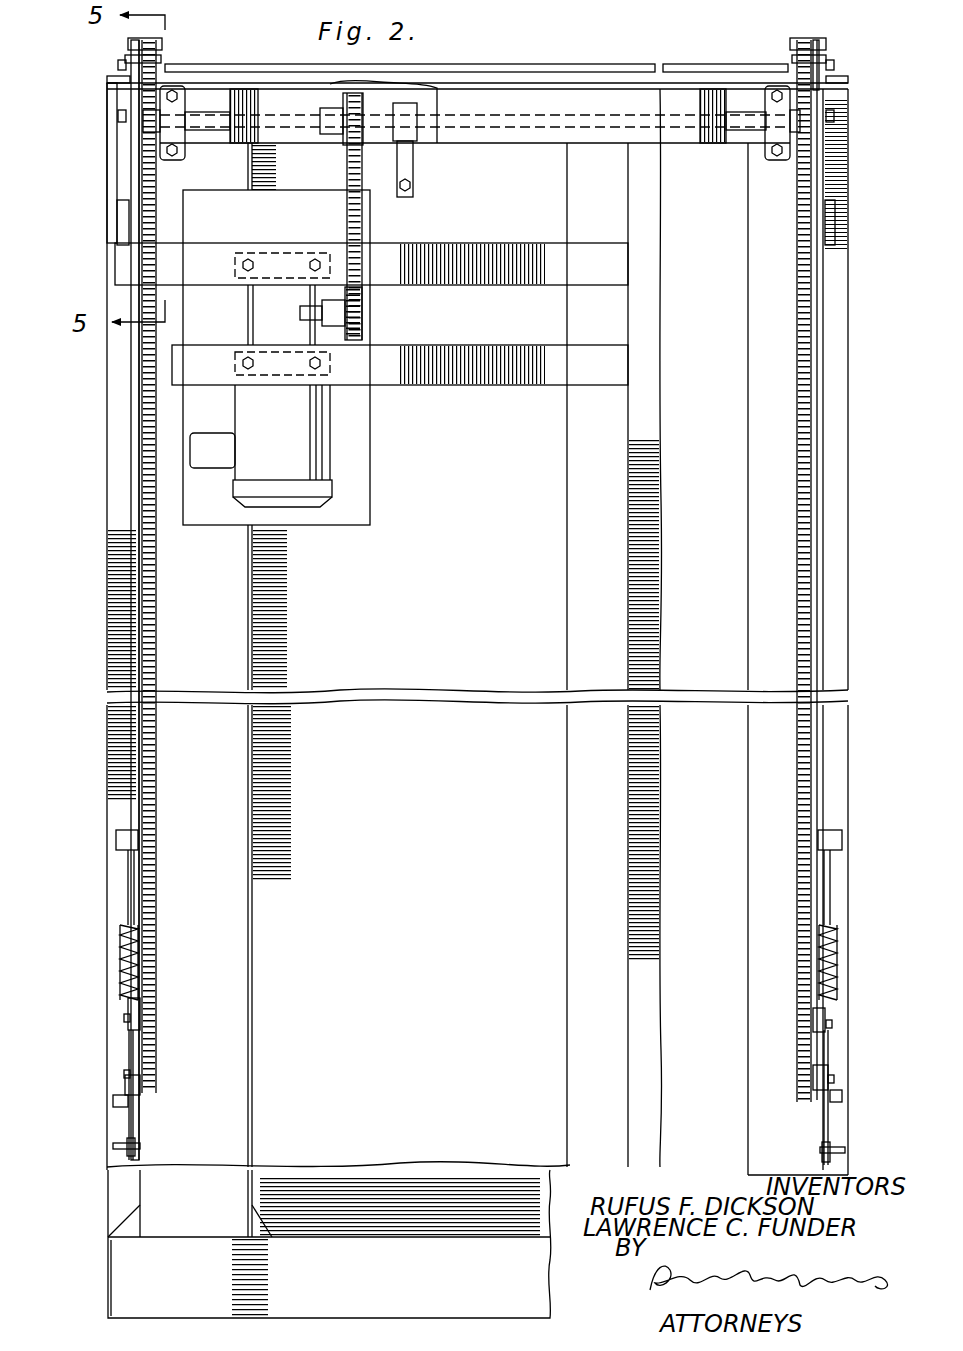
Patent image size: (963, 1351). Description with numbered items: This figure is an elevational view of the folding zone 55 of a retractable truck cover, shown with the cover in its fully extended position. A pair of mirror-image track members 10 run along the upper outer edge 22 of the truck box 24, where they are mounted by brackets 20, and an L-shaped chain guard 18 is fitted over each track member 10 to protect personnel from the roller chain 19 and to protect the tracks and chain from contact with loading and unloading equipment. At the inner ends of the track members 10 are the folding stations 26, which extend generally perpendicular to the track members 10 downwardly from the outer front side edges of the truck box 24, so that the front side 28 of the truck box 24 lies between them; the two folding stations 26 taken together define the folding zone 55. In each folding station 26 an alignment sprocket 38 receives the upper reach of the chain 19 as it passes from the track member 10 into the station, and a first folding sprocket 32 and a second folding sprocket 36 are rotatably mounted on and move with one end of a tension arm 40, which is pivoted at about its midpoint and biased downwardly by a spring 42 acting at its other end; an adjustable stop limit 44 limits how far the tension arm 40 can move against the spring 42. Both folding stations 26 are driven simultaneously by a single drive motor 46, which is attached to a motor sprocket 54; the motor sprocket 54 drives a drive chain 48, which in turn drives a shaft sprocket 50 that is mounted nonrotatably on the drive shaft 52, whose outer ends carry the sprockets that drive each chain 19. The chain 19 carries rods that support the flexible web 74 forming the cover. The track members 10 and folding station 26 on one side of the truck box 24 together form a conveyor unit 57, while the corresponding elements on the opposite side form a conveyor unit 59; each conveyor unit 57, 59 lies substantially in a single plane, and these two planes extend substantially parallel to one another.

The track members 10 is at (162, 42).
The L-shaped chain guard 18 is at (820, 44).
The roller chain 19 is at (140, 626).
The brackets 20 is at (118, 72).
The upper outer edge 22 is at (106, 81).
The truck box 24 is at (105, 750).
The folding stations 26 is at (129, 484).
The front side 28 is at (740, 762).
The first folding sprocket 32 is at (136, 1013).
The second folding sprocket 36 is at (135, 1086).
The alignment sprocket 38 is at (160, 59).
The tension arm 40 is at (126, 1056).
The spring 42 is at (120, 955).
The adjustable stop limit 44 is at (128, 1130).
The drive motor 46 is at (300, 426).
The drive chain 48 is at (356, 232).
The shaft sprocket 50 is at (345, 128).
The drive shaft 52 is at (535, 130).
The motor sprocket 54 is at (362, 318).
The folding zone 55 is at (375, 655).
The conveyor unit 57 is at (852, 152).
The conveyor unit 59 is at (128, 157).
The flexible web 74 is at (578, 64).